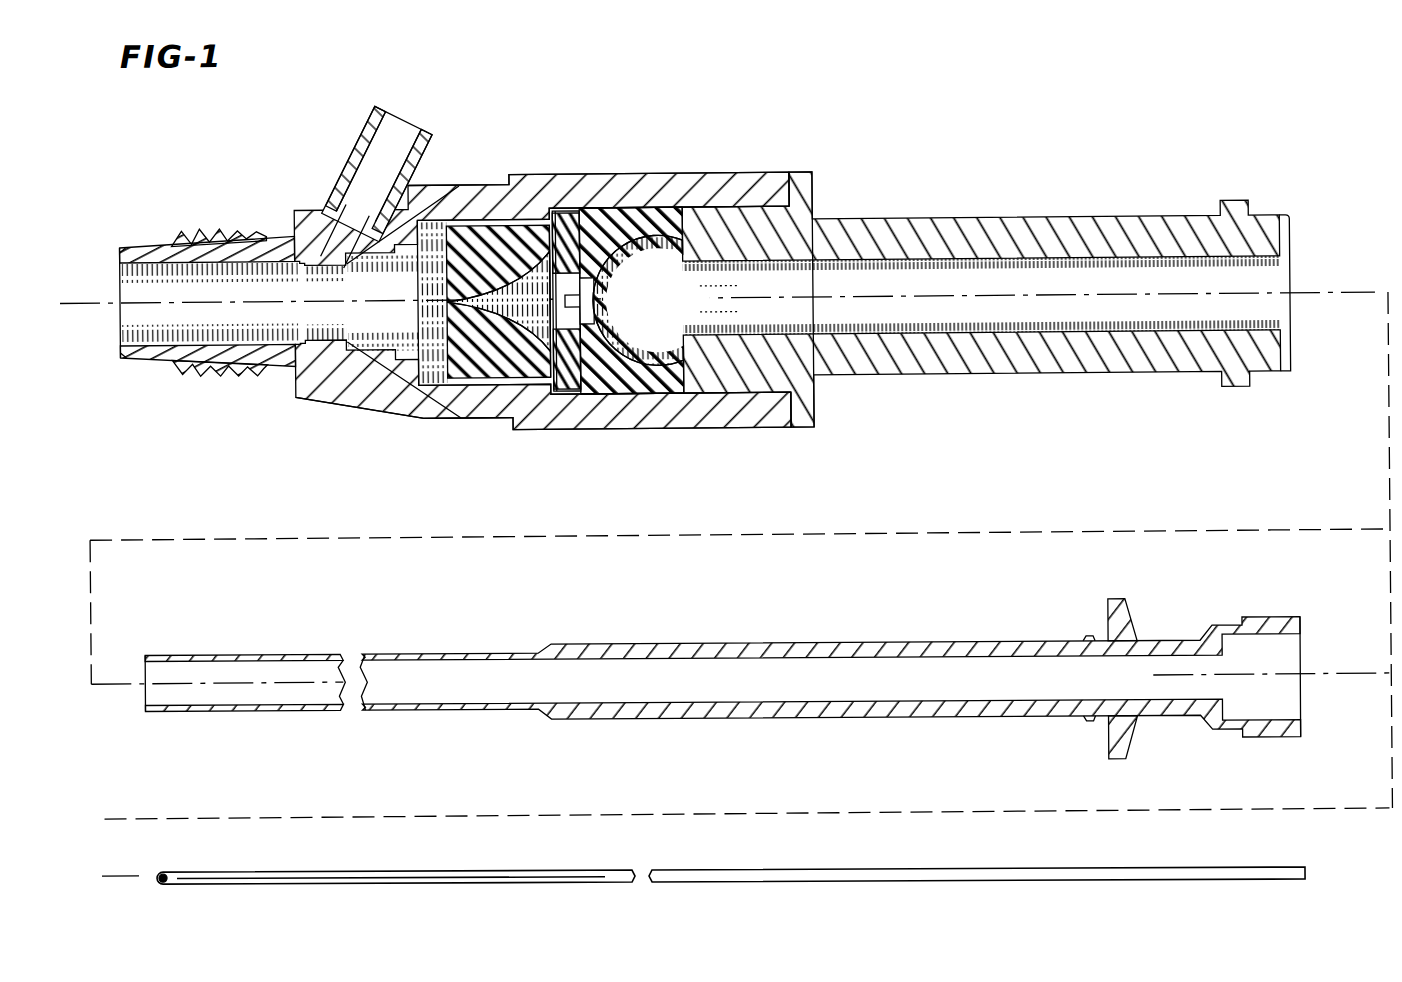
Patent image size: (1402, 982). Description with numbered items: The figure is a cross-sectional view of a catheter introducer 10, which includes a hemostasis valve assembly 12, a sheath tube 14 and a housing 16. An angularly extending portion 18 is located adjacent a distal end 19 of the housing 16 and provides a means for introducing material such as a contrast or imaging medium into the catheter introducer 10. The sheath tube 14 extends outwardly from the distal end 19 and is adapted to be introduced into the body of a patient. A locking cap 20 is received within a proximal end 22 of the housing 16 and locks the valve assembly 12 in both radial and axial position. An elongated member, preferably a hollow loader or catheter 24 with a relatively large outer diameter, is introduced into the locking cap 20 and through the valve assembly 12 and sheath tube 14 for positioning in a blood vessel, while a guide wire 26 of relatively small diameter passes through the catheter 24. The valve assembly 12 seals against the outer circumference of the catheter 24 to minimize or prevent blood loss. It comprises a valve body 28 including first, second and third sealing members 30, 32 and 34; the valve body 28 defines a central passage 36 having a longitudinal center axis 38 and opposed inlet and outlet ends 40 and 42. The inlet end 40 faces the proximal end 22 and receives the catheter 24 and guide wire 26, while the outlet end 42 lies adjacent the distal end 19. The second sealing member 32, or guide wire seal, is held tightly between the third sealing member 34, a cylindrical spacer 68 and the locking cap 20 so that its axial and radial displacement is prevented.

The catheter introducer 10 is at (1214, 190).
The hemostasis valve assembly 12 is at (598, 212).
The sheath tube 14 is at (146, 258).
The housing 16 is at (532, 189).
The angularly extending portion 18 is at (352, 154).
The distal end 19 is at (297, 383).
The locking cap 20 is at (973, 227).
The proximal end 22 is at (795, 179).
The catheter 24 is at (593, 654).
The guide wire 26 is at (592, 874).
The valve body 28 is at (617, 399).
The first sealing member 30 is at (490, 383).
The second sealing member 32 is at (690, 401).
The third sealing member 34 is at (565, 399).
The central passage 36 is at (560, 226).
The longitudinal center axis 38 is at (82, 303).
The inlet end 40 is at (735, 317).
The outlet end 42 is at (372, 411).
The cylindrical spacer 68 is at (625, 213).